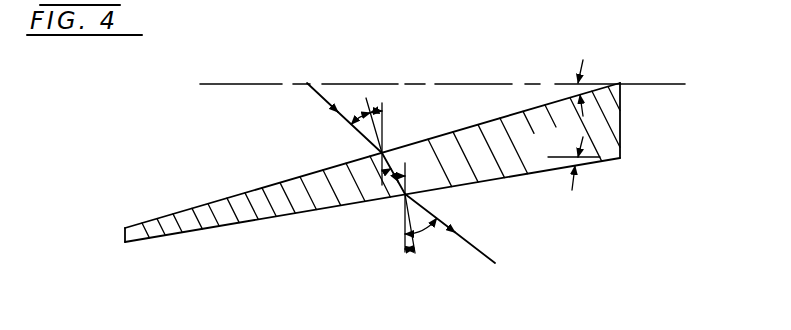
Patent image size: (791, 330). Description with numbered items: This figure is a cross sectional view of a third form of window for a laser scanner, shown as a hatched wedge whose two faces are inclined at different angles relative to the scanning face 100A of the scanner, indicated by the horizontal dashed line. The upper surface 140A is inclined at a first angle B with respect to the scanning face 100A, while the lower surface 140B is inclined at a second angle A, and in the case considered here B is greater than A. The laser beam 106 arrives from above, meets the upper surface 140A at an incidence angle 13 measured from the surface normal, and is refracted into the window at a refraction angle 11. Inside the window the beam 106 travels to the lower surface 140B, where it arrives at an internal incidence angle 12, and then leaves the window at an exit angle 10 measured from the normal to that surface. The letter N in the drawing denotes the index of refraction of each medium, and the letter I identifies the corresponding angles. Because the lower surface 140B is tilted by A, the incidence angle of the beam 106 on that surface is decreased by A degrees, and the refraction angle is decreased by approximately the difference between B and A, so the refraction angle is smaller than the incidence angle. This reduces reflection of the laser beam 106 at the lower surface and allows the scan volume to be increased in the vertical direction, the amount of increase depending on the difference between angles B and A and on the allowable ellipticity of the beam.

The scanning face 100A is at (458, 83).
The upper surface 140A is at (297, 177).
The lower surface 140B is at (500, 181).
The laser beam 106 is at (338, 115).
The angle I0 10 is at (421, 236).
The angle I1 11 is at (403, 152).
The angle I2 12 is at (384, 185).
The angle I3 13 is at (359, 123).
The second angle A is at (404, 250).
The first angle B is at (476, 122).